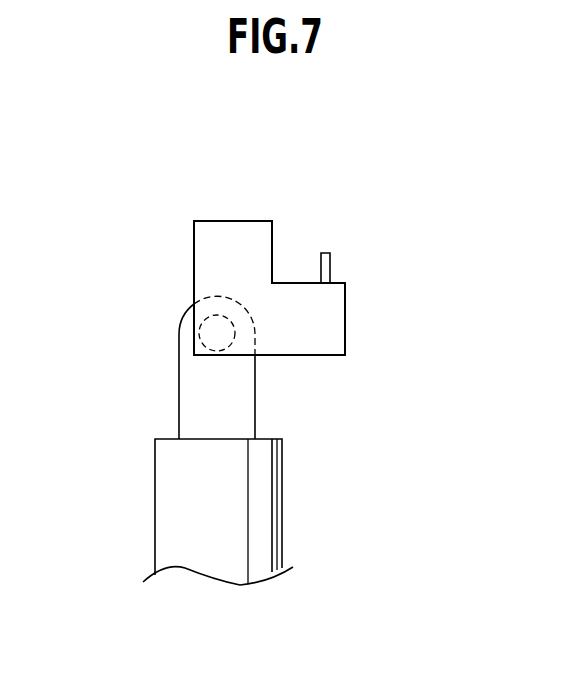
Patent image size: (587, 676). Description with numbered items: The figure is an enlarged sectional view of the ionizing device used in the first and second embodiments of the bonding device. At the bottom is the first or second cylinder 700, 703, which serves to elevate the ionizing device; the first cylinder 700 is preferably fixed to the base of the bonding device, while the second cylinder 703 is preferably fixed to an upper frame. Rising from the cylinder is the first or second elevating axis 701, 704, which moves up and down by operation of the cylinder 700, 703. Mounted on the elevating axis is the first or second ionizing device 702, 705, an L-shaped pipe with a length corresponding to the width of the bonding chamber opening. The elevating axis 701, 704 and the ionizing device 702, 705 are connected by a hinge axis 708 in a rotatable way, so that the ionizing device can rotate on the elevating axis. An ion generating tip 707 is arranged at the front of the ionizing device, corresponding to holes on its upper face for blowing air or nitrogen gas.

The first ionizing device 702 is at (264, 253).
The second ionizing device 705 is at (231, 228).
The ion generating tip 707 is at (330, 265).
The hinge axis 708 is at (215, 334).
The first elevating axis 701 is at (291, 367).
The second elevating axis 704 is at (243, 400).
The first cylinder 700 is at (291, 512).
The second cylinder 703 is at (267, 508).